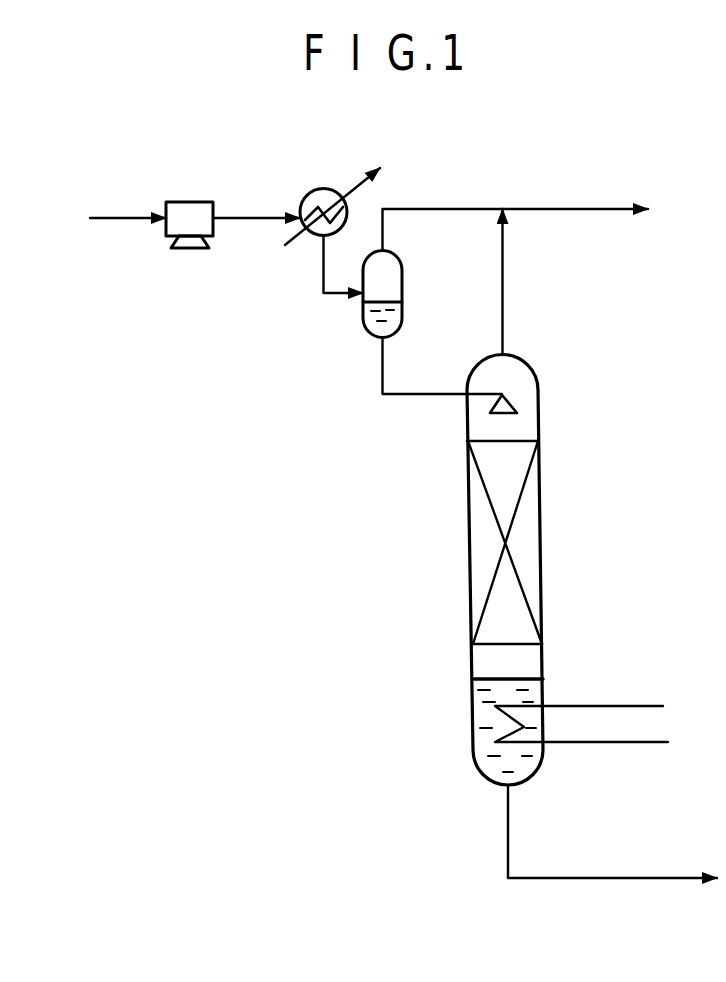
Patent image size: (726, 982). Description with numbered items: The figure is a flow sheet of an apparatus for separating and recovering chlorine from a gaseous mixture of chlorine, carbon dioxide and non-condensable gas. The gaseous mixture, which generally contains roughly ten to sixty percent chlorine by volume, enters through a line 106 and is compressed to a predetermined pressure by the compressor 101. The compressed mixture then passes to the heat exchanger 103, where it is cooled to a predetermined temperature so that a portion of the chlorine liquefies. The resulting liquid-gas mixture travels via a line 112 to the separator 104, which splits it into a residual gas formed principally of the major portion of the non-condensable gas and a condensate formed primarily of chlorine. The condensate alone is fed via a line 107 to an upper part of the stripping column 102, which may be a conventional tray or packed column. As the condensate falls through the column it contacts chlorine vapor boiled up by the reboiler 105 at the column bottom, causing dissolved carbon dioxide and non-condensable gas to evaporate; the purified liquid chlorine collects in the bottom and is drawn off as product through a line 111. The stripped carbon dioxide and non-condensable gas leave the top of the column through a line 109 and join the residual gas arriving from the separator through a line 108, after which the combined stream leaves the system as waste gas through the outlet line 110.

The compressor 101 is at (193, 206).
The stripping column 102 is at (482, 562).
The heat exchanger 103 is at (334, 188).
The separator 104 is at (402, 281).
The reboiler 105 is at (635, 744).
The line 106 is at (123, 216).
The line 107 is at (413, 397).
The line 108 is at (462, 208).
The line 109 is at (500, 278).
The product outlet line 110 is at (585, 208).
The line 111 is at (640, 877).
The line 112 is at (321, 272).